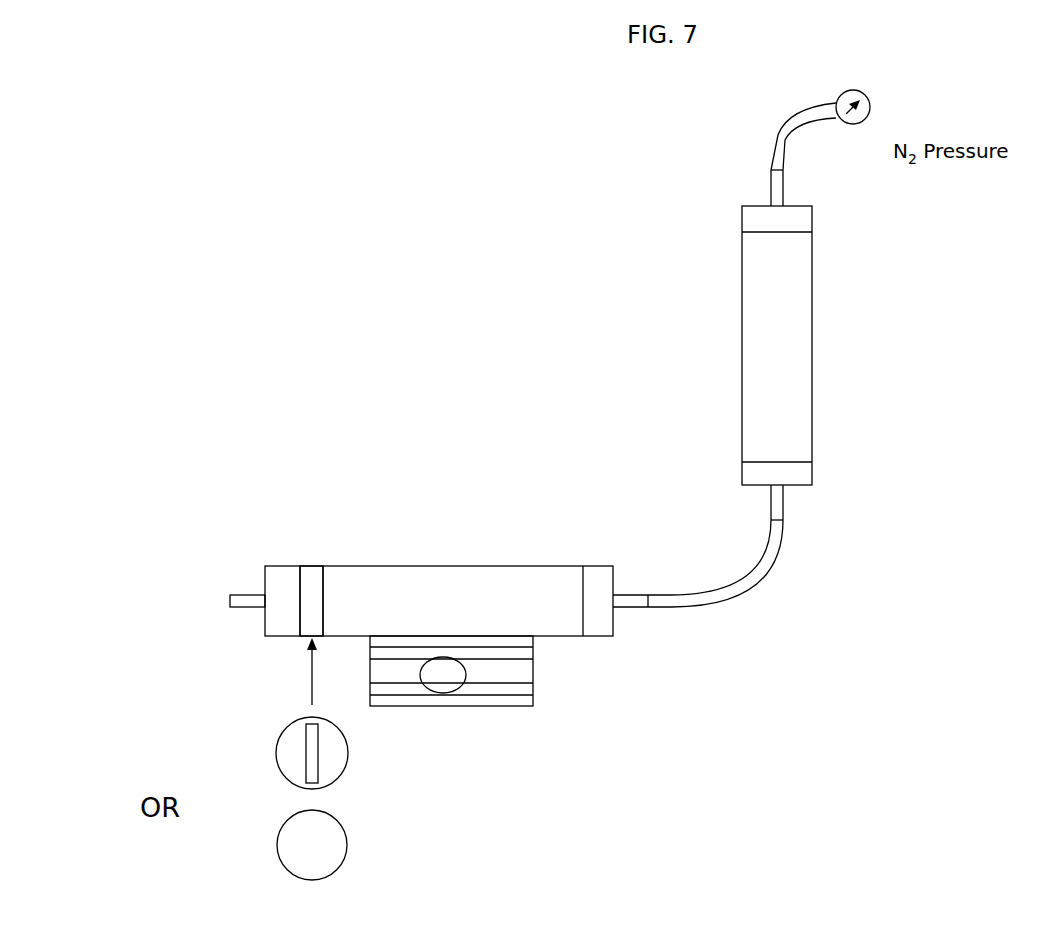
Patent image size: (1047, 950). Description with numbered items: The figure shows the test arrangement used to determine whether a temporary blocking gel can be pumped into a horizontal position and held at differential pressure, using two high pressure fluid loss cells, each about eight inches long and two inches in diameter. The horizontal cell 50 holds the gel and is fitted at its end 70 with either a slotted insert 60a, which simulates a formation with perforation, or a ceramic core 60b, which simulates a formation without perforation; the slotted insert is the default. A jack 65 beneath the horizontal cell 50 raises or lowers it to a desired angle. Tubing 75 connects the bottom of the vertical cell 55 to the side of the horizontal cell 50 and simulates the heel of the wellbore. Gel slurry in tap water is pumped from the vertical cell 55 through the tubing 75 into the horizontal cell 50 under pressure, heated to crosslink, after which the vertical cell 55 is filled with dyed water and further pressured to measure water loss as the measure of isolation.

The horizontal cell 50 is at (439, 560).
The vertical cell 55 is at (818, 333).
The slotted insert 60a is at (259, 753).
The ceramic core 60b is at (259, 845).
The jack 65 is at (468, 725).
The end of the cell 70 is at (300, 644).
The tubing 75 is at (784, 564).